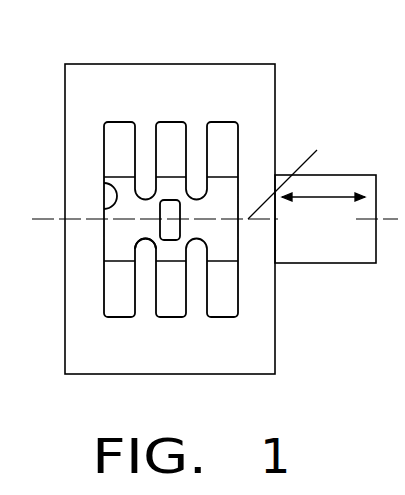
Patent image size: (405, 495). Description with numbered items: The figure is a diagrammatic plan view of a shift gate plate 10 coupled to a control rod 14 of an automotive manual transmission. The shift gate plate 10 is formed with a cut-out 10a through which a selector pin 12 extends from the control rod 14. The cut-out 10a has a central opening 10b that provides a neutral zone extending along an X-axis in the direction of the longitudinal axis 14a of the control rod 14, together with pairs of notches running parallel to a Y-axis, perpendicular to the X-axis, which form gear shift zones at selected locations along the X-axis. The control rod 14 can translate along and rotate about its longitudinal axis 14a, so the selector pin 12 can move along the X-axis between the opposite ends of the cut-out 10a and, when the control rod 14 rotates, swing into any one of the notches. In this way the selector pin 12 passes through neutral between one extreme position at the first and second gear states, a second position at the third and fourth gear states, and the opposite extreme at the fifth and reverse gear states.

The shift gate plate 10 is at (148, 63).
The cut-out 10a is at (104, 184).
The central opening 10b is at (134, 238).
The selector pin 12 is at (166, 219).
The control rod 14 is at (292, 250).
The longitudinal axis 14a is at (288, 178).